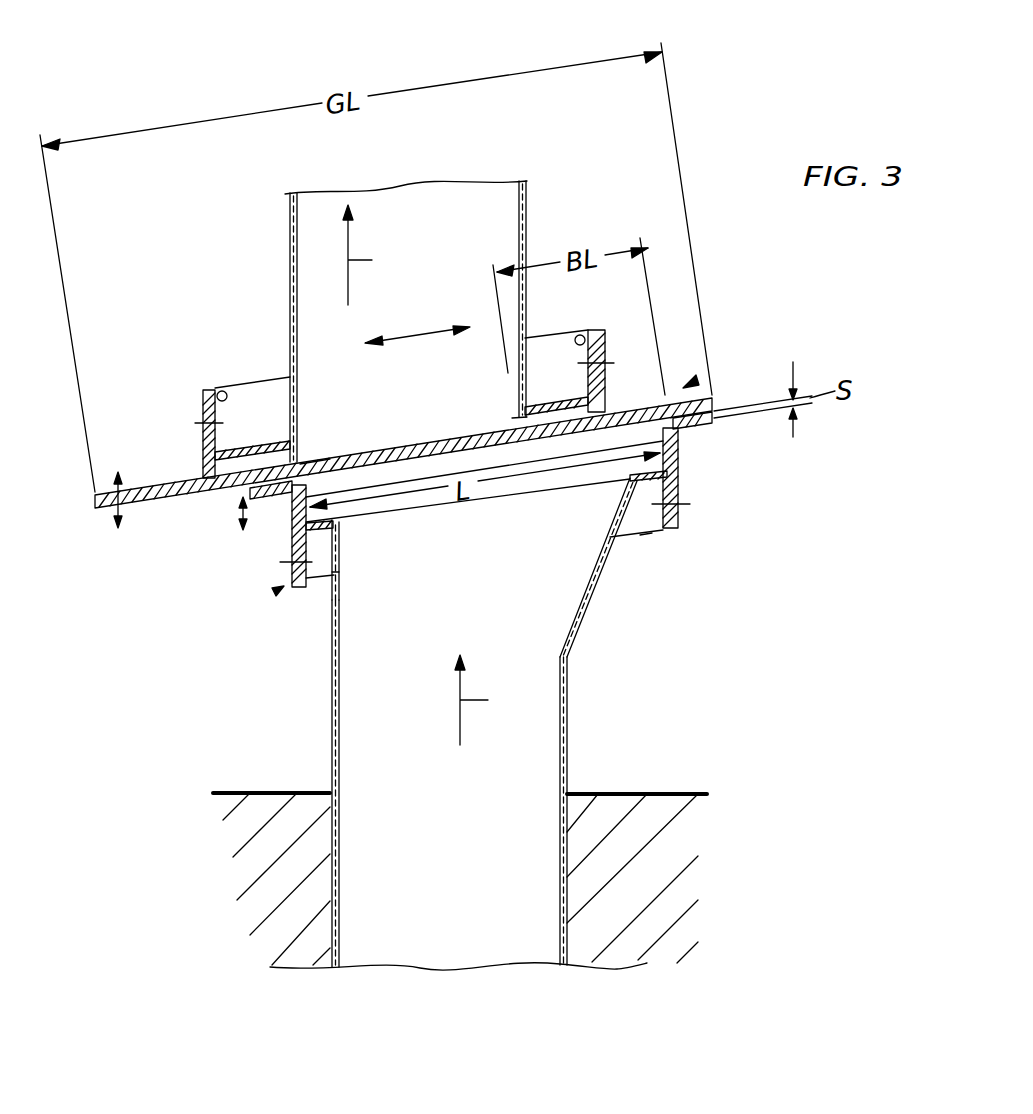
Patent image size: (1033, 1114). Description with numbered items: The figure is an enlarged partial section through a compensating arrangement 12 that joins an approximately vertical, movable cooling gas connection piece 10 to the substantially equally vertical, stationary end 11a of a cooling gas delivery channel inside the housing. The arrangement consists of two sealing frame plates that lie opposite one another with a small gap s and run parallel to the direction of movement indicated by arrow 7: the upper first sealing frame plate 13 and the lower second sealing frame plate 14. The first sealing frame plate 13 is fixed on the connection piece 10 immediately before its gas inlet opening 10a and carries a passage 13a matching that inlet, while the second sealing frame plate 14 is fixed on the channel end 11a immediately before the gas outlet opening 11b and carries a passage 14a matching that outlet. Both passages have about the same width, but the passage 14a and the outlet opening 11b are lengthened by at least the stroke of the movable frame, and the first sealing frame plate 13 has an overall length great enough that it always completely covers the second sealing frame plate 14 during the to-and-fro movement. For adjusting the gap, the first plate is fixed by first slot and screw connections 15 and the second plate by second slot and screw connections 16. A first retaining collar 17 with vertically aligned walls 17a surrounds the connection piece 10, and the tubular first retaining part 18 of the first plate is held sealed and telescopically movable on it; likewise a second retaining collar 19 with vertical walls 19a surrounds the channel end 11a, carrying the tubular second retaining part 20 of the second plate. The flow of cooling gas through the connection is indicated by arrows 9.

The arrow indicating direction of movement 7 is at (413, 343).
The flow direction arrows 9 is at (427, 475).
The cooling gas connection piece 10 is at (493, 227).
The gas inlet opening 10a is at (518, 416).
The end of cooling gas delivery channel 11a is at (362, 696).
The gas outlet opening 11b is at (343, 523).
The compensating arrangement 12 is at (690, 380).
The first sealing frame plate 13 is at (645, 396).
The passage of first sealing frame plate 13a is at (302, 462).
The second sealing frame plate 14 is at (690, 432).
The passage of second sealing frame plate 14a is at (290, 510).
The first slot and screw connections 15 is at (204, 416).
The second slot and screw connections 16 is at (290, 574).
The first retaining collar 17 is at (249, 365).
The vertically aligned walls of first retaining collar 17a is at (220, 391).
The first retaining part 18 is at (200, 456).
The second retaining collar 19 is at (318, 592).
The vertically aligned walls of second retaining collar 19a is at (342, 577).
The second retaining part 20 is at (278, 592).